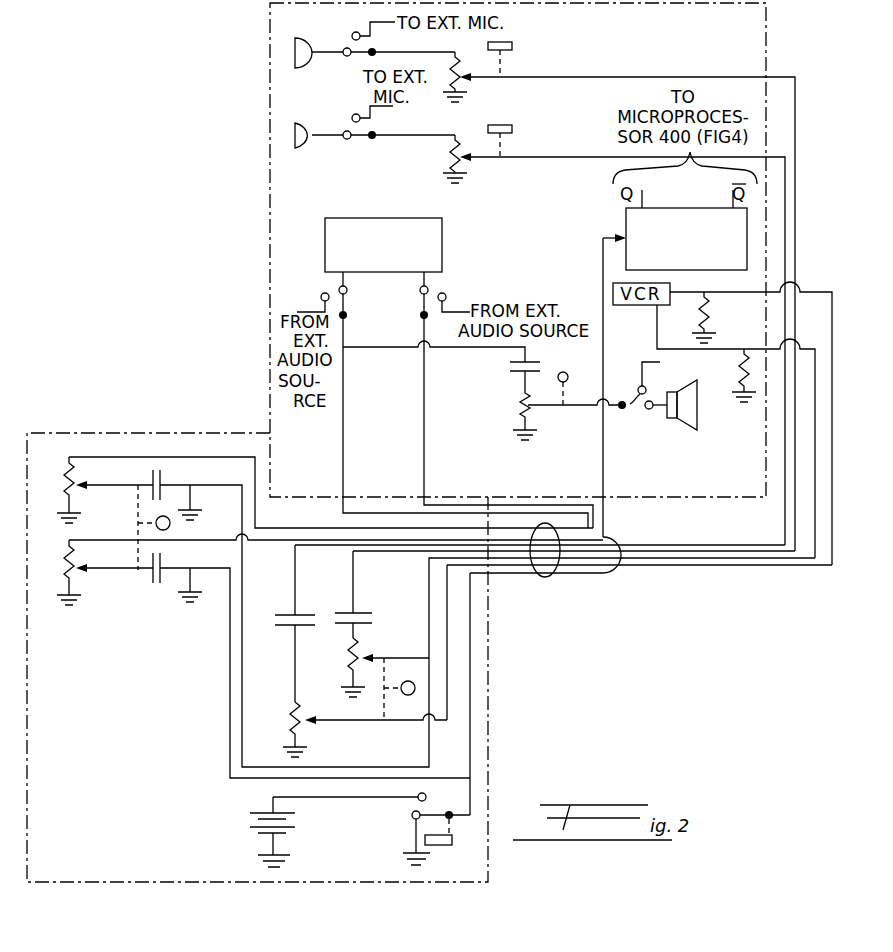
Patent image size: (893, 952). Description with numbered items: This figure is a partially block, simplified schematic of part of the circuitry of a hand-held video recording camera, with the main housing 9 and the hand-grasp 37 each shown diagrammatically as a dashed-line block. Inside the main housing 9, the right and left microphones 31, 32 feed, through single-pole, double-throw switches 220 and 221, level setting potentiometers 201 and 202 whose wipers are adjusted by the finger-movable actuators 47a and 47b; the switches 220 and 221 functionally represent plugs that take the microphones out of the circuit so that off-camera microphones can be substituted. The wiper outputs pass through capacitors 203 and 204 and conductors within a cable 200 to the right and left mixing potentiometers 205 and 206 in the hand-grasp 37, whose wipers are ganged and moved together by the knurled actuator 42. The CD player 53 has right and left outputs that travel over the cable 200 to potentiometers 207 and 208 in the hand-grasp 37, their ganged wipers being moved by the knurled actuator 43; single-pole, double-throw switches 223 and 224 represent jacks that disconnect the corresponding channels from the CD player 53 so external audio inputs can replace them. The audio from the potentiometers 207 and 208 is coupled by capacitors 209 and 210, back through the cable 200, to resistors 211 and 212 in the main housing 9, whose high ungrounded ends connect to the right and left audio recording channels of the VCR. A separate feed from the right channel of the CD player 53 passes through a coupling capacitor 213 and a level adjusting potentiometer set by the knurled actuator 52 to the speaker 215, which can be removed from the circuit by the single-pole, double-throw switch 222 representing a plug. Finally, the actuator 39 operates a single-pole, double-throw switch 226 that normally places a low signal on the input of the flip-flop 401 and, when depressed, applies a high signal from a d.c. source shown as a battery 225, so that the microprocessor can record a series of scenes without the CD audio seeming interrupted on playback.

The main housing 9 is at (270, 195).
The right microphone 31 is at (290, 39).
The left microphone 32 is at (299, 123).
The hand-grasp 37 is at (152, 432).
The actuator 39 is at (452, 840).
The knurled actuator 42 is at (408, 681).
The knurled actuator 43 is at (171, 523).
The finger-movable actuator 47a is at (578, 56).
The finger-movable actuator 47b is at (578, 139).
The knurled actuator 52 is at (563, 372).
The CD player 53 is at (379, 218).
The cable 200 is at (545, 578).
The level setting potentiometer 201 is at (467, 87).
The level setting potentiometer 202 is at (467, 163).
The capacitor 203 is at (377, 620).
The capacitor 204 is at (273, 620).
The right mixing potentiometer 205 is at (353, 650).
The left mixing potentiometer 206 is at (295, 705).
The potentiometer 207 is at (77, 495).
The potentiometer 208 is at (81, 577).
The capacitor 209 is at (162, 470).
The capacitor 210 is at (162, 553).
The resistor 211 is at (709, 313).
The resistor 212 is at (740, 372).
The coupling capacitor 213 is at (510, 366).
The speaker 215 is at (697, 414).
The single-pole, double-throw switch 220 is at (350, 36).
The single-pole, double-throw switch 221 is at (352, 116).
The single-pole, double-throw switch 222 is at (623, 412).
The single-pole, double-throw switch 223 is at (324, 294).
The single-pole, double-throw switch 224 is at (443, 288).
The battery 225 is at (295, 818).
The single-pole, double-throw switch 226 is at (412, 808).
The flip-flop 401 is at (666, 188).